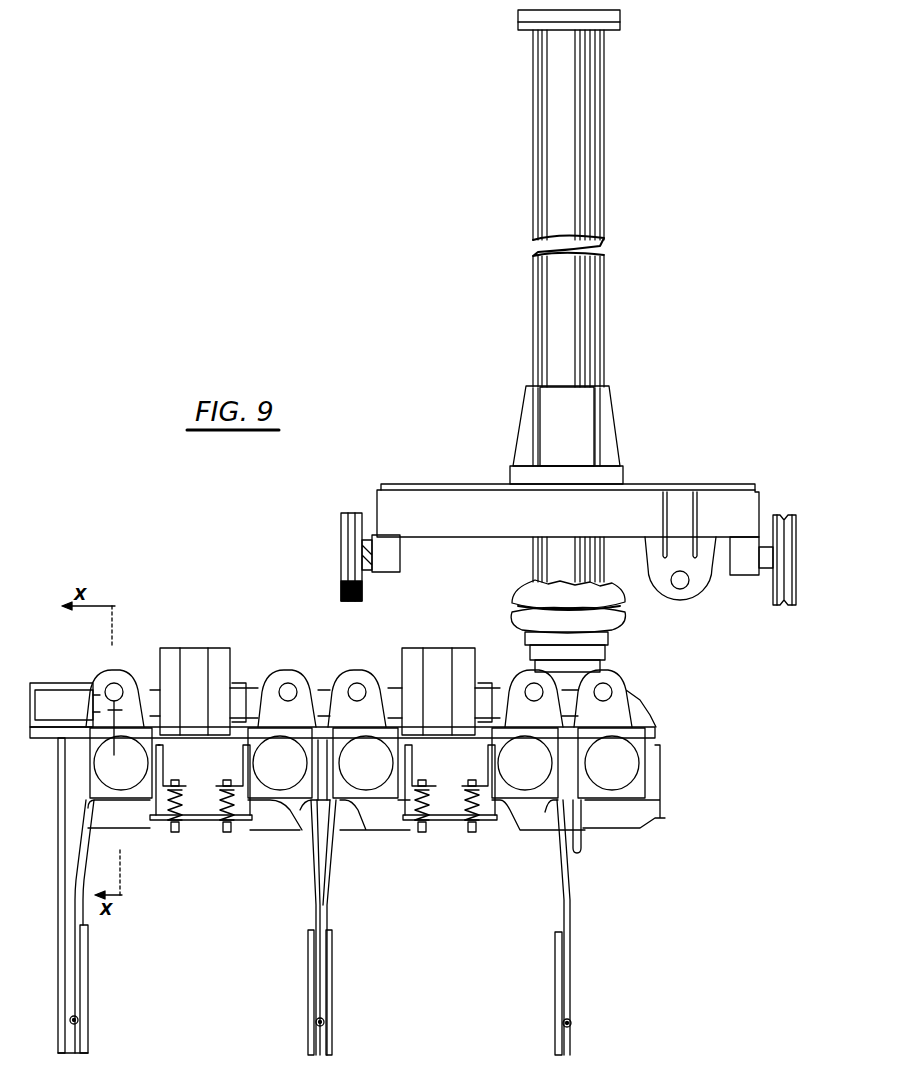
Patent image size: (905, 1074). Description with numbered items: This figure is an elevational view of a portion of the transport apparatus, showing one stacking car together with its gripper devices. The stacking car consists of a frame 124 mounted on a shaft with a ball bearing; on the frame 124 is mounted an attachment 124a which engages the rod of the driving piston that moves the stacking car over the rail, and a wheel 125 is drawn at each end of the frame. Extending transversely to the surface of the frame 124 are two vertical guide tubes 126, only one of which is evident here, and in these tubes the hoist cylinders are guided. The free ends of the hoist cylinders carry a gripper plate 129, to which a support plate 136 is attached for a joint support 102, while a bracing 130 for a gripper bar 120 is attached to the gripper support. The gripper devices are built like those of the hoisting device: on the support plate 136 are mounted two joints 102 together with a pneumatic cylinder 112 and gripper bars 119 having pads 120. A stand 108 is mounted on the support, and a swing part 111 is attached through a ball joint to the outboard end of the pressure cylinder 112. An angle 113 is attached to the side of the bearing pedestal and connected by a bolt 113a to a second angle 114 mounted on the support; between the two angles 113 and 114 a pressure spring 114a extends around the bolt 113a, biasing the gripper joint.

The joint 102 is at (140, 806).
The stand 108 is at (104, 683).
The swing part 111 is at (140, 683).
The pneumatic cylinder 112 is at (185, 660).
The angle 113 is at (220, 826).
The bolt 113a is at (465, 825).
The second angle 114 is at (200, 790).
The pressure spring 114a is at (175, 822).
The gripper bar 119 is at (76, 893).
The pad 120 is at (89, 972).
The frame 124 is at (462, 500).
The attachment 124a is at (691, 592).
The guide wheel 125 is at (350, 520).
The guide tube 126 is at (597, 359).
The gripper plate 129 is at (60, 684).
The bracing 130 is at (73, 820).
The support plate 136 is at (56, 738).